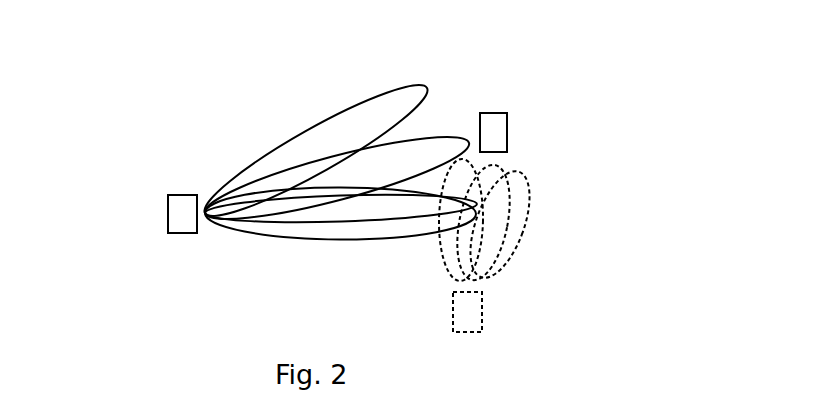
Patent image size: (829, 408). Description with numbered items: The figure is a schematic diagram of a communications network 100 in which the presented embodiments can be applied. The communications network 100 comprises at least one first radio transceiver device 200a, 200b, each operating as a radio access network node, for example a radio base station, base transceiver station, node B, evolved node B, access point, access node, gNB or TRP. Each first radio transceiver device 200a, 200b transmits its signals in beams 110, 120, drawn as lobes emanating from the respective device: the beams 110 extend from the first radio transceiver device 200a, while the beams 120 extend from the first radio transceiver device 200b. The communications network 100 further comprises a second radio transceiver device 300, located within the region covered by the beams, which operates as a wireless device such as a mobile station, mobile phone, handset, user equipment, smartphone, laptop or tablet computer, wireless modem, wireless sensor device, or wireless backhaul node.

The communications network 100 is at (596, 79).
The beams 110 is at (282, 142).
The beams 120 is at (530, 217).
The first radio transceiver device 200a is at (175, 208).
The first radio transceiver device 200b is at (477, 310).
The second radio transceiver device 300 is at (507, 133).